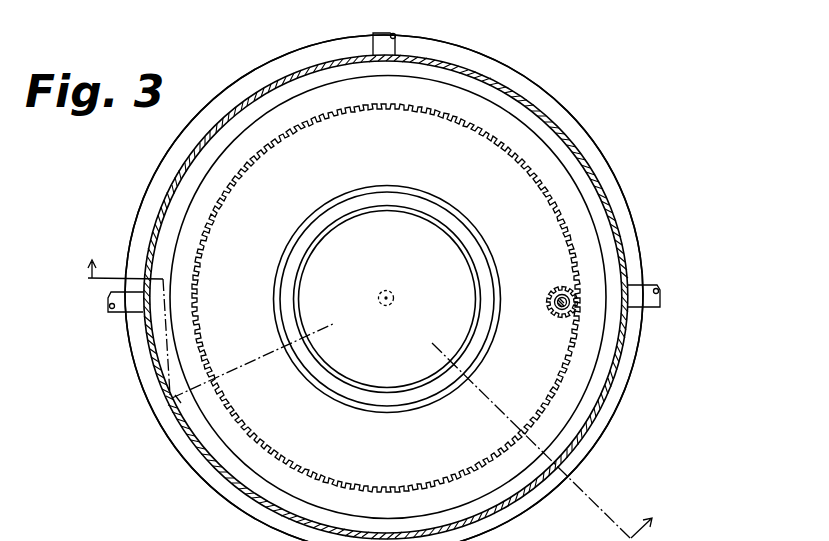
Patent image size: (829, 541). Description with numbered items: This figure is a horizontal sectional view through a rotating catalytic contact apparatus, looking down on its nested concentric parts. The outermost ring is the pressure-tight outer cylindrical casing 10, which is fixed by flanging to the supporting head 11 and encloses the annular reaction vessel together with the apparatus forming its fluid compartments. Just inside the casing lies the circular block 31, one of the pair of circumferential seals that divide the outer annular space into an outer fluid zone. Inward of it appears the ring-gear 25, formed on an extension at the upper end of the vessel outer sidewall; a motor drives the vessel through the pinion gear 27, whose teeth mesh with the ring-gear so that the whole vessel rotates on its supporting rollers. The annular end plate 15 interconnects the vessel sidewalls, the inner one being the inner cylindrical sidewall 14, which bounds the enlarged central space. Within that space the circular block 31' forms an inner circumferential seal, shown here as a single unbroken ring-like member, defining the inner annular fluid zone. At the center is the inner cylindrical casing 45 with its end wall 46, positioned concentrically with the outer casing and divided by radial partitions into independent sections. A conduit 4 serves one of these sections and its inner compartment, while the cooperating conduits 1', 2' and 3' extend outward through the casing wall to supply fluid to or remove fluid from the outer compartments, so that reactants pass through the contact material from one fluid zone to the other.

The outer cylindrical casing 10 is at (610, 186).
The supporting head 11 is at (556, 501).
The circular block 31 is at (386, 297).
The ring-gear 25 is at (590, 262).
The annular end plate 15 is at (447, 165).
The pinion gear 27 is at (550, 291).
The inner cylindrical sidewall 14 is at (470, 224).
The circular block 31' is at (406, 299).
The end wall 46 is at (398, 332).
The inner cylindrical casing 45 is at (306, 343).
The conduit 4 is at (373, 390).
The conduit 2' is at (366, 45).
The conduit 1' is at (660, 312).
The conduit 3' is at (106, 320).